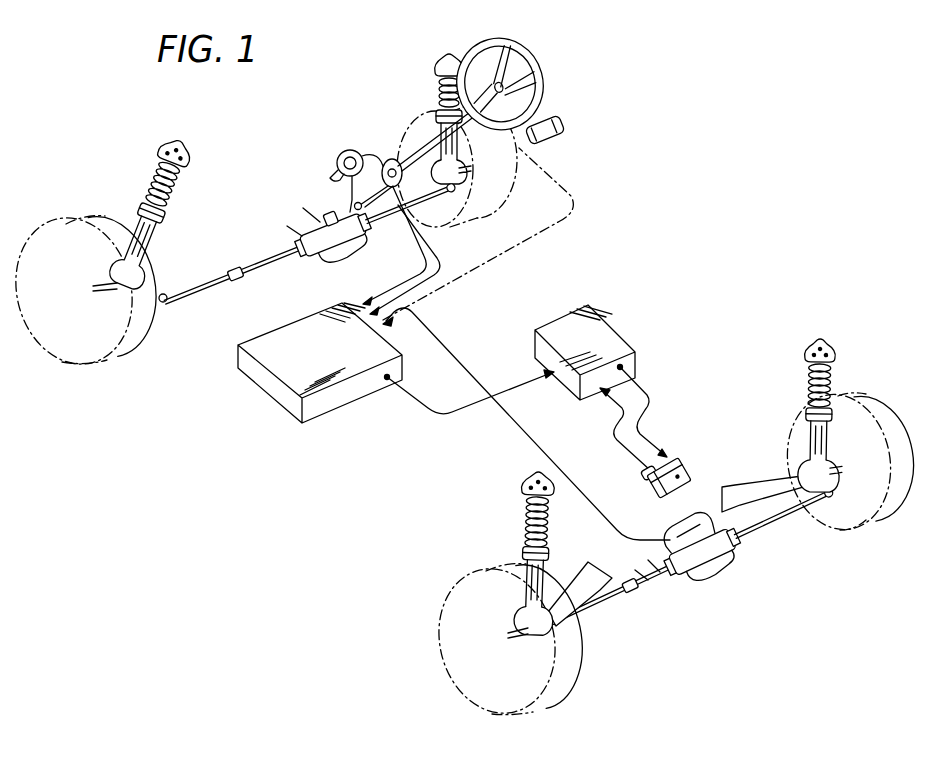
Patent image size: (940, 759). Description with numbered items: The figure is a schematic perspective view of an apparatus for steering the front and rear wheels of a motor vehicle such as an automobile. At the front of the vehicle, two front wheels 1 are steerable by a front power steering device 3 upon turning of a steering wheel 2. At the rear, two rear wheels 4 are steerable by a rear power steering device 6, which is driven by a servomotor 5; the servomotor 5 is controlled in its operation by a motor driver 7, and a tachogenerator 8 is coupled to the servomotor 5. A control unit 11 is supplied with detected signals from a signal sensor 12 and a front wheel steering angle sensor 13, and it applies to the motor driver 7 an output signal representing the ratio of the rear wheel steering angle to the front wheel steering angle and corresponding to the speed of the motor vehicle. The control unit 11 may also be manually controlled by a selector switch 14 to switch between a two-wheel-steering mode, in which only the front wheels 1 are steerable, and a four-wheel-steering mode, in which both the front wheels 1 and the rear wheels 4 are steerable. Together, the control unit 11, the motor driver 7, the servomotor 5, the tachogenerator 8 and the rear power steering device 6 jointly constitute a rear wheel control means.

The front wheels 1 is at (56, 364).
The steering wheel 2 is at (528, 68).
The front power steering device 3 is at (332, 253).
The rear wheels 4 is at (433, 626).
The servomotor 5 is at (678, 469).
The rear power steering device 6 is at (703, 569).
The motor driver 7 is at (603, 340).
The tachogenerator 8 is at (644, 475).
The control unit 11 is at (289, 372).
The signal sensor 12 is at (347, 151).
The front wheel steering angle sensor 13 is at (389, 160).
The selector switch 14 is at (562, 136).